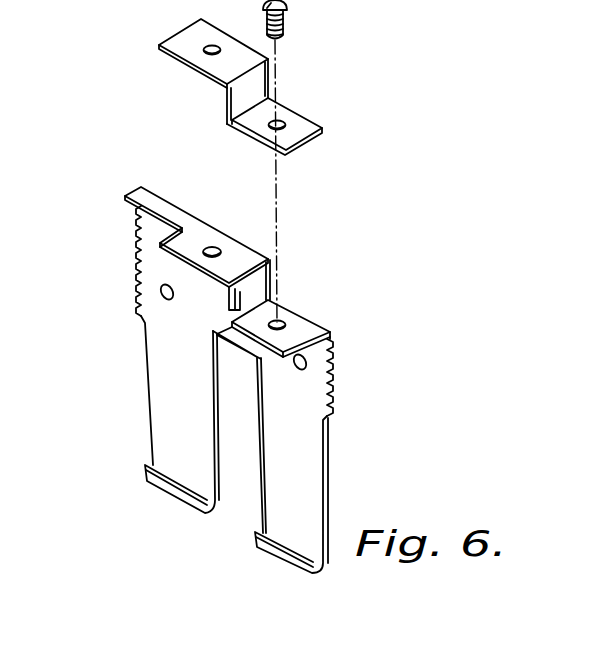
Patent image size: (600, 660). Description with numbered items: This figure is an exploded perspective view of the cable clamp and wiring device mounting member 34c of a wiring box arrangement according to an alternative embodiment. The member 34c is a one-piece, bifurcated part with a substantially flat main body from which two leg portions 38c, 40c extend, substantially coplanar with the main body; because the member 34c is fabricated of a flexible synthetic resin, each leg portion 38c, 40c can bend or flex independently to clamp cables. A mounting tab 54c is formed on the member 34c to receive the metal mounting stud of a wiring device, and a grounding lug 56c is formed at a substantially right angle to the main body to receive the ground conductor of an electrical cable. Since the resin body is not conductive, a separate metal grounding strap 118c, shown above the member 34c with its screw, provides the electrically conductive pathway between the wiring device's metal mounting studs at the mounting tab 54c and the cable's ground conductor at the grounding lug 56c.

The metal grounding strap 118c is at (305, 130).
The clamp and wiring device mounting member 34c is at (210, 377).
The mounting tab 54c is at (198, 238).
The grounding lug 56c is at (298, 332).
The leg portion 38c is at (199, 411).
The leg portion 40c is at (311, 484).